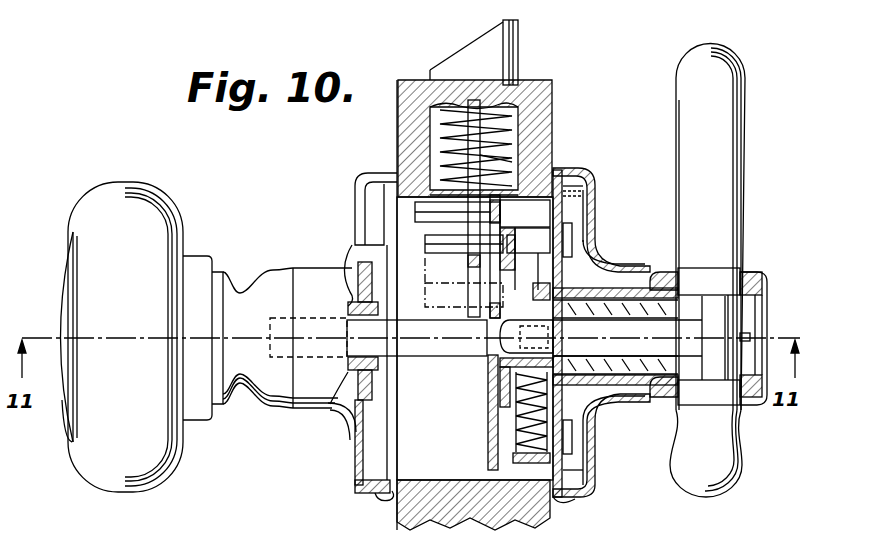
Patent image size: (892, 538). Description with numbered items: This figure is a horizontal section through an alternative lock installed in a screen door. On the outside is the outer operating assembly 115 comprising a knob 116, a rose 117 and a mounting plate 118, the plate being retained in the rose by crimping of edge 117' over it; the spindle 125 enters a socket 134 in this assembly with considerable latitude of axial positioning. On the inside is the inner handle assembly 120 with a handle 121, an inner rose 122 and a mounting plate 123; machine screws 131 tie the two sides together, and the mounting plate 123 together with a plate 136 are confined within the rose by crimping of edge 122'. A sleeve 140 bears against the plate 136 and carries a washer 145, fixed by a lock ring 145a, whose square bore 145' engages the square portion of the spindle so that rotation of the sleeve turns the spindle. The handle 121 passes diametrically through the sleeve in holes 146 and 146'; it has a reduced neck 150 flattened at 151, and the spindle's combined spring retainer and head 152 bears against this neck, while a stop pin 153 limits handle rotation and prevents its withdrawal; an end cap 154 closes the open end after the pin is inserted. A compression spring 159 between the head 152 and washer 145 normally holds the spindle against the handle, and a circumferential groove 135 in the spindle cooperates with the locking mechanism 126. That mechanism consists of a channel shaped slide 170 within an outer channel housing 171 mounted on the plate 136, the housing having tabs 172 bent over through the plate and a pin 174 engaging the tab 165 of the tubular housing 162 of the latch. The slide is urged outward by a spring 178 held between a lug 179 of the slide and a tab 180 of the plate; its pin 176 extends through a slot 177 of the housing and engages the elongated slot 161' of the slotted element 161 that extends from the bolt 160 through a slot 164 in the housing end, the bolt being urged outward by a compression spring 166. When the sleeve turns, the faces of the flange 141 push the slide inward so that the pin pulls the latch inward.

The knob 116 is at (95, 183).
The outer operating assembly 115 is at (185, 195).
The socket 134 is at (345, 322).
The rose 117 is at (357, 305).
The mounting plate 118 is at (355, 460).
The edge 117' is at (373, 503).
The spindle 125 is at (405, 348).
The bolt 160 is at (474, 48).
The handle 121 is at (525, 55).
The tubular housing 162 is at (520, 112).
The slotted element 161 is at (527, 208).
The slot 161' is at (438, 167).
The compression spring 166 is at (505, 165).
The pin 174 is at (415, 212).
The slot 164 is at (502, 202).
The tab 165 is at (455, 230).
The flange 141 is at (525, 264).
The pin 176 is at (440, 278).
The slot 177 is at (490, 262).
The circumferential groove 135 is at (487, 336).
The machine screws 131 is at (526, 336).
The locking mechanism 126 is at (486, 383).
The lug 179 is at (498, 364).
The channel shaped slide 170 is at (513, 398).
The spring 178 is at (513, 428).
The outer channel housing 171 is at (513, 442).
The tab 180 is at (500, 460).
The tabs 172 is at (573, 236).
The inner rose 122 is at (601, 332).
The mounting plate 123 is at (594, 178).
The edge 122' is at (582, 509).
The plate 136 is at (585, 478).
The square bore 145' is at (615, 336).
The combined spring retainer and head 152 is at (680, 340).
The washer 145 is at (639, 338).
The lock ring 145a is at (606, 270).
The compression spring 159 is at (630, 392).
The sleeve 140 is at (645, 272).
The hole 146 is at (709, 271).
The hole 146' is at (762, 310).
The flattened side 151 is at (709, 392).
The end cap 154 is at (762, 295).
The reduced neck 150 is at (742, 312).
The stop pin 153 is at (752, 337).
The inner handle assembly 120 is at (744, 188).